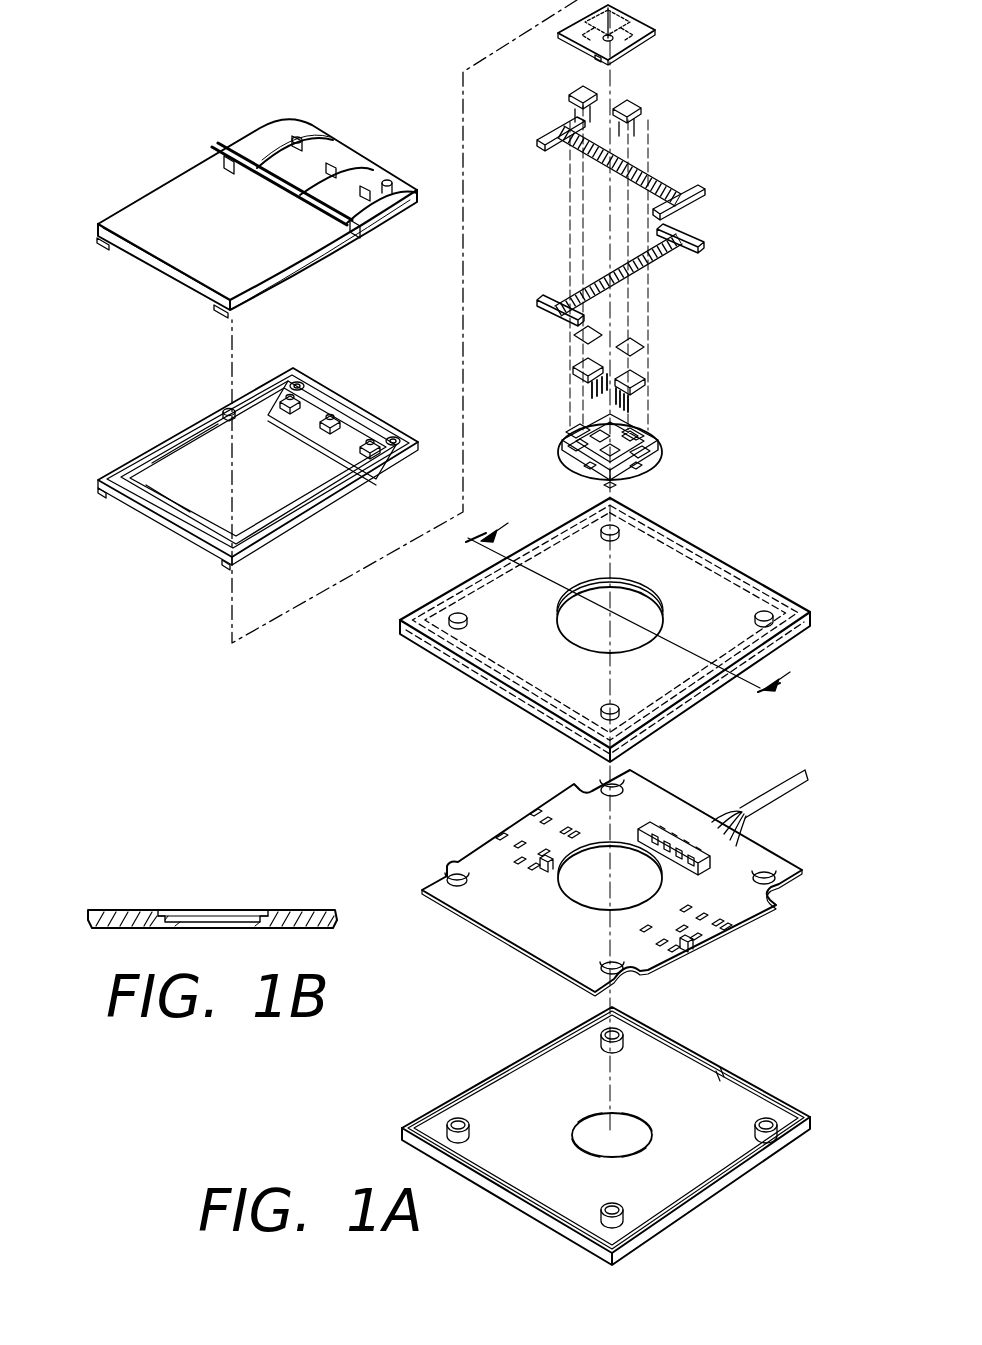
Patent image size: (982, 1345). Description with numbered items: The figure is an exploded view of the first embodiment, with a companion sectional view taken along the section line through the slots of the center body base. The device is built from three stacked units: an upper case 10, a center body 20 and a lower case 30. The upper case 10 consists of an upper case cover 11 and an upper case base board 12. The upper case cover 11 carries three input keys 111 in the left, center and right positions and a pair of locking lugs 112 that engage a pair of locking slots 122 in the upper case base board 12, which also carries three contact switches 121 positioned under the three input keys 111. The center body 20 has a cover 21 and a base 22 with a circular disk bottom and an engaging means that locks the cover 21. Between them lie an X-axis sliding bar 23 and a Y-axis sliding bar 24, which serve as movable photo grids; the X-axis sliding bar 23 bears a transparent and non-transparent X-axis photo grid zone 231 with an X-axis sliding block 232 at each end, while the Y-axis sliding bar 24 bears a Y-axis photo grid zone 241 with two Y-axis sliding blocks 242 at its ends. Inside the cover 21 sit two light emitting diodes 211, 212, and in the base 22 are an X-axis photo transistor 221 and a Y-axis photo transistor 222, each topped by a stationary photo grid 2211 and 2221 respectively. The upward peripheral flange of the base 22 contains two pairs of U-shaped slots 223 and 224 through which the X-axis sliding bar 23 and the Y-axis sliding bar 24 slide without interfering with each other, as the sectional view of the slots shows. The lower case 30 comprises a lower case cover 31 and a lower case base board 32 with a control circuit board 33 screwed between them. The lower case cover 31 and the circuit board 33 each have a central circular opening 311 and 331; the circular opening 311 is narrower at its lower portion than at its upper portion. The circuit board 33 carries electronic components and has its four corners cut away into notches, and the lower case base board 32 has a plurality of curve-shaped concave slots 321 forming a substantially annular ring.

The upper case 10 is at (84, 212).
The upper case cover 11 is at (168, 192).
The input keys 111 is at (268, 135).
The locking lugs 112 is at (100, 248).
The upper case base board 12 is at (323, 400).
The contact switches 121 is at (370, 440).
The locking slots 122 is at (100, 486).
The center body 20 is at (822, 35).
The cover 21 is at (640, 22).
The light emitting diode 211 is at (642, 104).
The light emitting diode 212 is at (578, 92).
The base 22 is at (660, 455).
The X-axis photo transistor 221 is at (646, 380).
The stationary photo grid 2211 is at (641, 342).
The Y-axis photo transistor 222 is at (575, 364).
The stationary photo grid 2221 is at (576, 336).
The U-shaped slots 223 is at (650, 434).
The U-shaped slots 224 is at (575, 440).
The X-axis sliding bar 23 is at (662, 142).
The X-axis photo grid zone 231 is at (648, 172).
The X-axis sliding block 232 is at (700, 190).
The Y-axis sliding bar 24 is at (555, 262).
The Y-axis photo grid zone 241 is at (672, 262).
The Y-axis sliding blocks 242 is at (705, 233).
The lower case 30 is at (832, 612).
The lower case cover 31 is at (725, 590).
The circular opening 311 is at (632, 640).
The lower case base board 32 is at (775, 1098).
The curve-shaped concave slots 321 is at (655, 1140).
The control circuit board 33 is at (742, 900).
The circular opening 331 is at (585, 895).